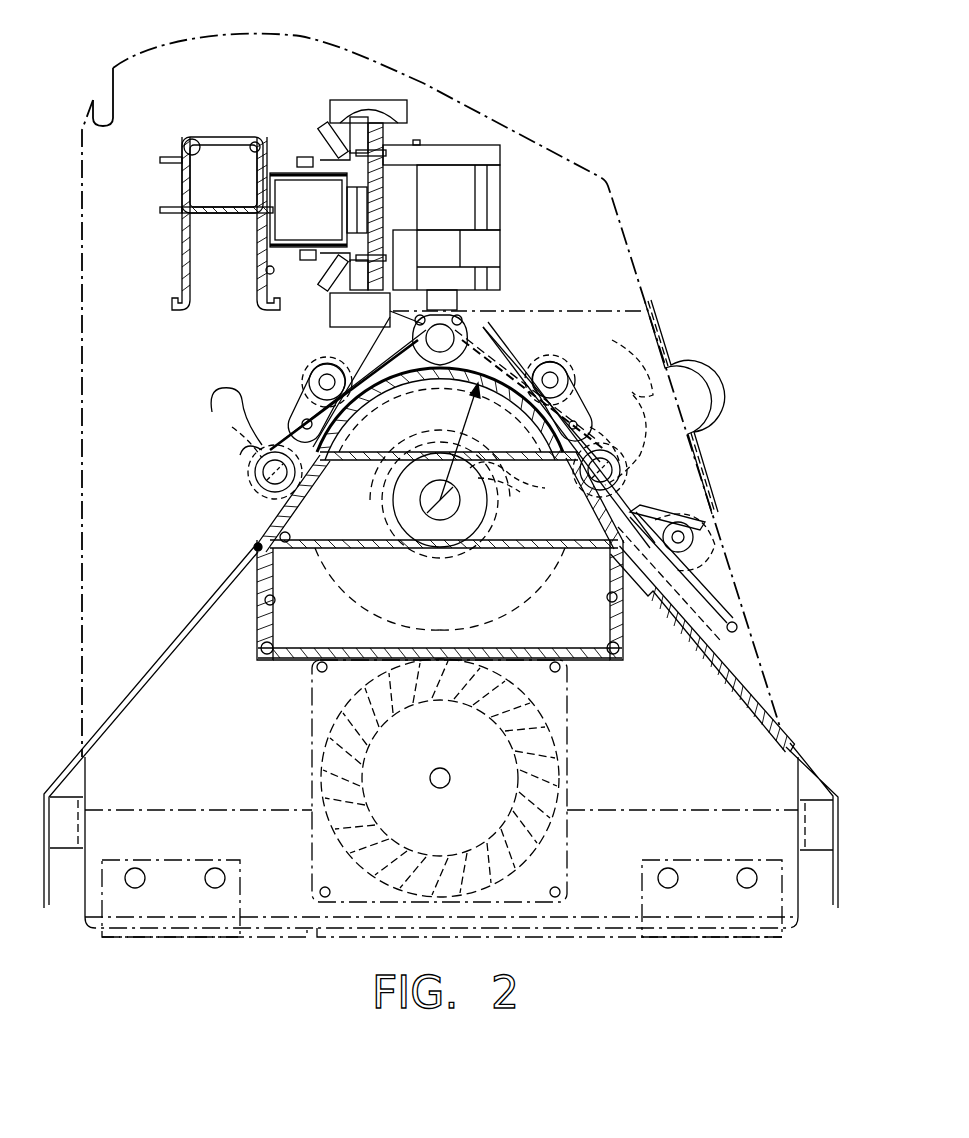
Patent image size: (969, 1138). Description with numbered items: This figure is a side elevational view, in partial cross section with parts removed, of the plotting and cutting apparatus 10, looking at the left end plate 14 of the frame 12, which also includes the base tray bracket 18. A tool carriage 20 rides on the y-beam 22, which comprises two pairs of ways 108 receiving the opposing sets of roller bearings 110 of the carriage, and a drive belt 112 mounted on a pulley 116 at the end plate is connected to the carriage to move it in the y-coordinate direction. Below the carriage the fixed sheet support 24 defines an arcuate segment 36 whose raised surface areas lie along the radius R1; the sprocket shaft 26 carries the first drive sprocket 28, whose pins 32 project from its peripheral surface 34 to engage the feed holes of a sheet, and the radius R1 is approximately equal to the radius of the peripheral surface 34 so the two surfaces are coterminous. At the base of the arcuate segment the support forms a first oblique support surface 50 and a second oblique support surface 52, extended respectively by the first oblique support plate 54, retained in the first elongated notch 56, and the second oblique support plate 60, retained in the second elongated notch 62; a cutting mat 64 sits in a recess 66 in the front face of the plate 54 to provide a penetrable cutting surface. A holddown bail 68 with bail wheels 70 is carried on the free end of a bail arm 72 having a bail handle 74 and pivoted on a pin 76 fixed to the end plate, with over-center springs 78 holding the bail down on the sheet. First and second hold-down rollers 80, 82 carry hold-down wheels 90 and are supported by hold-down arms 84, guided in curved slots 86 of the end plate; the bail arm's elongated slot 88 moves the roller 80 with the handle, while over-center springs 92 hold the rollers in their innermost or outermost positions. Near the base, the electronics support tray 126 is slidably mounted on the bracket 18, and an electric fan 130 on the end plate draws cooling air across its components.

The apparatus 10 is at (566, 137).
The frame 12 is at (623, 197).
The left end plate 14 is at (207, 33).
The base tray bracket 18 is at (337, 938).
The tool carriage 20 is at (488, 145).
The y-beam 22 is at (224, 137).
The sheet support 24 is at (582, 662).
The sprocket shaft 26 is at (396, 497).
The first drive sprocket 28 is at (327, 575).
The pins 32 is at (435, 633).
The peripheral surface 34 is at (492, 622).
The arcuate segment 36 is at (407, 393).
The first oblique support surface 50 is at (623, 510).
The second oblique support surface 52 is at (272, 525).
The first oblique support plate 54 is at (810, 762).
The first elongated notch 56 is at (611, 568).
The second oblique support plate 60 is at (127, 698).
The second elongated notch 62 is at (252, 548).
The cutting mat 64 is at (753, 690).
The recess 66 is at (728, 692).
The holddown bail 68 is at (470, 328).
The bail wheels 70 is at (288, 425).
The bail arm 72 is at (592, 311).
The bail handle 74 is at (717, 410).
The pin 76 is at (698, 528).
The over-center springs 78 is at (707, 593).
The first hold-down roller 80 is at (582, 497).
The second hold-down roller 82 is at (258, 481).
The hold-down arms 84 is at (304, 366).
The curved slots 86 is at (214, 426).
The elongated slot 88 is at (508, 472).
The hold-down wheels 90 is at (247, 449).
The over-center springs 92 is at (348, 352).
The ways 108 is at (327, 147).
The roller bearings 110 is at (398, 140).
The drive belt 112 is at (273, 217).
The pulley 116 is at (272, 166).
The electronics support tray 126 is at (217, 807).
The electric fan 130 is at (310, 715).
The radius R1 is at (478, 441).